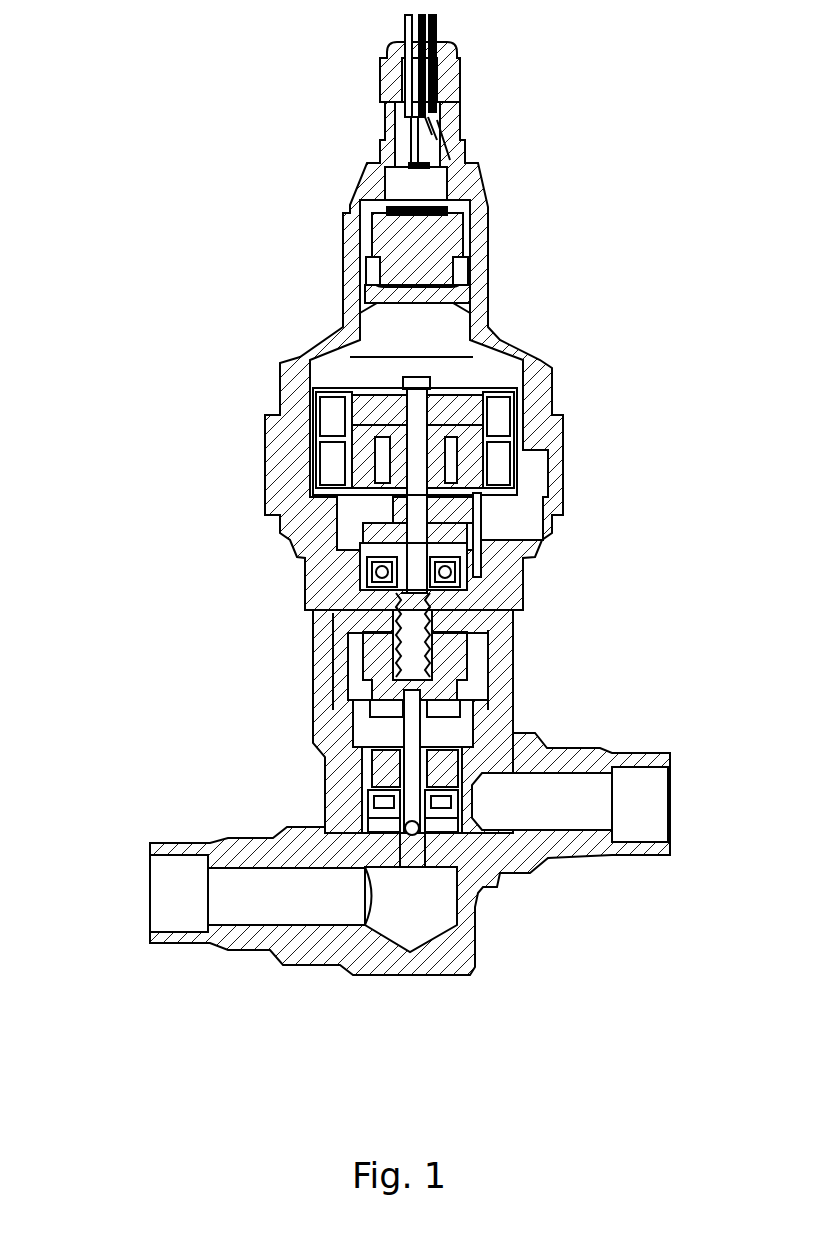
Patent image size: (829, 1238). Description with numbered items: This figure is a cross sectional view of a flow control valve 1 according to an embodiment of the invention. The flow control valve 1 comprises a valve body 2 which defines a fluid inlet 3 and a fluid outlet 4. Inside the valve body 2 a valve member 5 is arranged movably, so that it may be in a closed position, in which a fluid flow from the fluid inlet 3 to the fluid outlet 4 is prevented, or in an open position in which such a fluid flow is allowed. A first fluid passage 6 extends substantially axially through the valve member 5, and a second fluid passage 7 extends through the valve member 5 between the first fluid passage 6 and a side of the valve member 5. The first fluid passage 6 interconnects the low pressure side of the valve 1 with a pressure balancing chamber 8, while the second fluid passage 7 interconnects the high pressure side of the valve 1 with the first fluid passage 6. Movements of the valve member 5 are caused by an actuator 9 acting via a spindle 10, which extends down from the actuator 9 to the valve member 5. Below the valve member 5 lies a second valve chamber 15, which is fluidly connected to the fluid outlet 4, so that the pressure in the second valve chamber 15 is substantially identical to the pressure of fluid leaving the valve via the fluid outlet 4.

The flow control valve 1 is at (600, 125).
The valve body 2 is at (512, 858).
The fluid inlet 3 is at (652, 790).
The fluid outlet 4 is at (180, 893).
The valve member 5 is at (388, 800).
The first fluid passage 6 is at (413, 815).
The second fluid passage 7 is at (425, 820).
The pressure balancing chamber 8 is at (442, 718).
The actuator 9 is at (463, 433).
The spindle 10 is at (433, 597).
The second valve chamber 15 is at (416, 905).